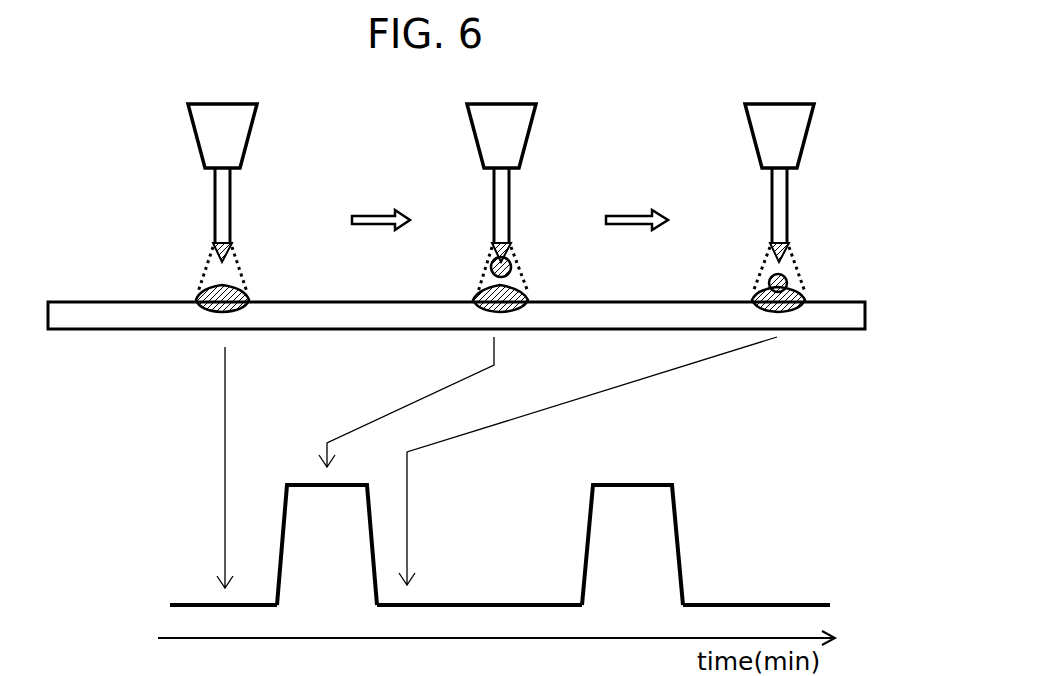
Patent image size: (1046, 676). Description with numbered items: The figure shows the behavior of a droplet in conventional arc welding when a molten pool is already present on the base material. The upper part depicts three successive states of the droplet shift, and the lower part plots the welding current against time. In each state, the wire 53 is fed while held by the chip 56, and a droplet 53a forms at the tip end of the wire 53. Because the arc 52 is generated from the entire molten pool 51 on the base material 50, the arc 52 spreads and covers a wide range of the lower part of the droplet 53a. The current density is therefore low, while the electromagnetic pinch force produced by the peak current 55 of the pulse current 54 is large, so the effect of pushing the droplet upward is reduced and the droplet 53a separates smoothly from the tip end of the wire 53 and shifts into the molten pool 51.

The base material 50 is at (73, 312).
The molten pool 51 is at (202, 292).
The arc 52 is at (243, 273).
The wire 53 is at (222, 198).
The droplet 53a is at (230, 247).
The pulse current 54 is at (197, 592).
The peak current 55 is at (305, 483).
The chip 56 is at (232, 133).